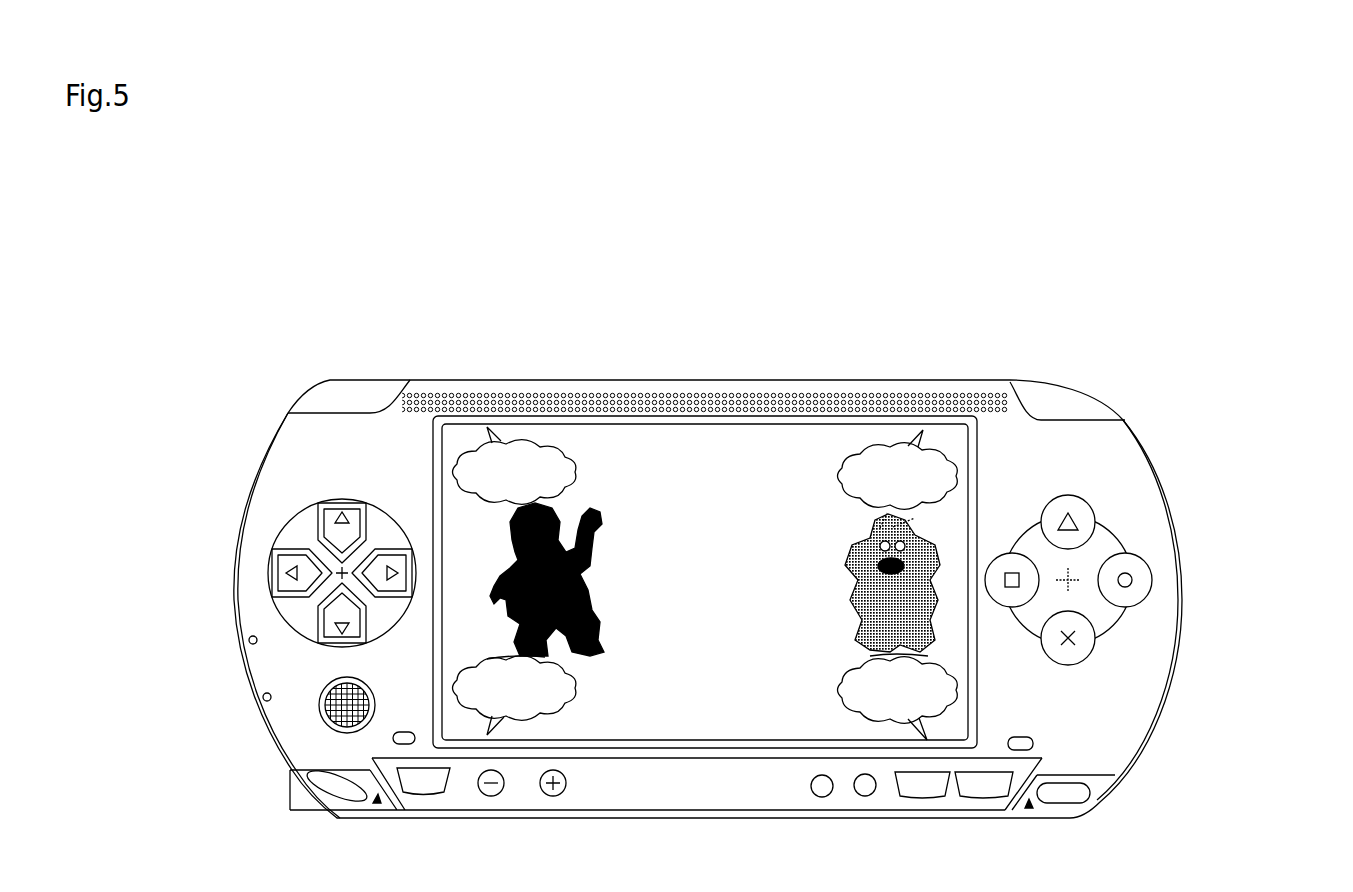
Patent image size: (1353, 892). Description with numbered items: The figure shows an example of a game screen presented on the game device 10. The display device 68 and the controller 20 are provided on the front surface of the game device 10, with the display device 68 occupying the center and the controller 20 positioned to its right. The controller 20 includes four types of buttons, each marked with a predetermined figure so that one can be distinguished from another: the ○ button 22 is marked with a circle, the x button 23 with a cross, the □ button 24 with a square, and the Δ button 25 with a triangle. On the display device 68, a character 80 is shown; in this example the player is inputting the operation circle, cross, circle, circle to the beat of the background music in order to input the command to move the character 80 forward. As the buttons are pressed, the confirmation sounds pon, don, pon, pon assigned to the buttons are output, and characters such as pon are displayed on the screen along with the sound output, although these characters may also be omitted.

The game device 10 is at (1064, 359).
The display device 68 is at (785, 452).
The character 80 is at (590, 572).
The controller 20 is at (1273, 477).
The Δ button 25 is at (1087, 517).
The ○ button 22 is at (1143, 573).
The □ button 24 is at (1027, 580).
The x button 23 is at (1083, 642).